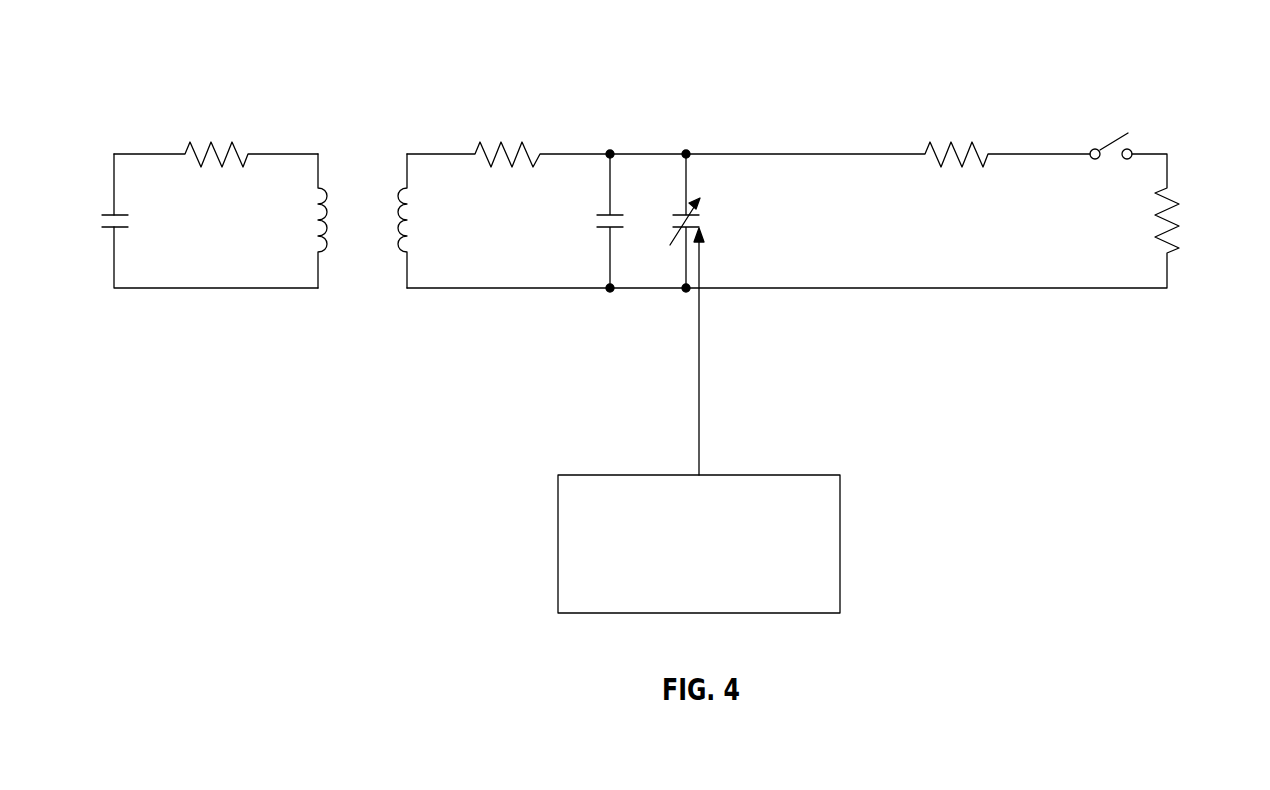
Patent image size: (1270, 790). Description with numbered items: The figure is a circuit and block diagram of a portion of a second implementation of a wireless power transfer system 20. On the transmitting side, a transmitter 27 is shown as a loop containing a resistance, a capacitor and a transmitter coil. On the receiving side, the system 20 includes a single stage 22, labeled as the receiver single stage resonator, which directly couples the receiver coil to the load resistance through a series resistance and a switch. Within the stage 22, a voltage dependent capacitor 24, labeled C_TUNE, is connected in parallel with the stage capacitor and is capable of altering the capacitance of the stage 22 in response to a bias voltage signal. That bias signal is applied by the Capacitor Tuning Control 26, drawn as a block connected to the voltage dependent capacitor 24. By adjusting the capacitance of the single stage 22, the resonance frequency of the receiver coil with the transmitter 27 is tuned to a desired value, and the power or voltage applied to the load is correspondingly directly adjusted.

The WPT system 20 is at (1160, 78).
The single stage 22 is at (455, 290).
The voltage dependent capacitor 24 is at (703, 222).
The Capacitor Tuning Control 26 is at (780, 474).
The transmitter 27 is at (160, 290).